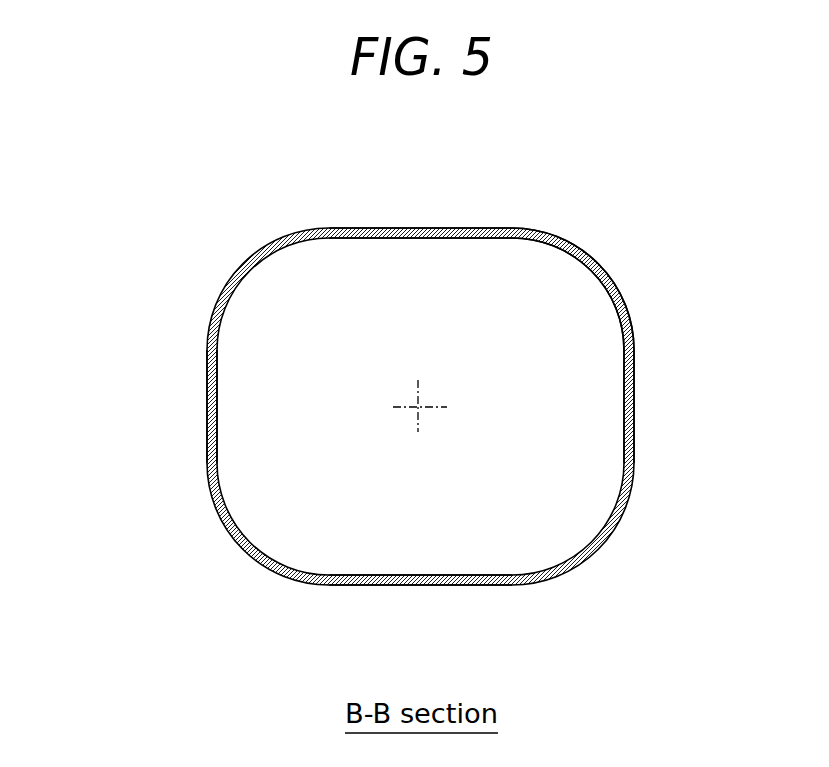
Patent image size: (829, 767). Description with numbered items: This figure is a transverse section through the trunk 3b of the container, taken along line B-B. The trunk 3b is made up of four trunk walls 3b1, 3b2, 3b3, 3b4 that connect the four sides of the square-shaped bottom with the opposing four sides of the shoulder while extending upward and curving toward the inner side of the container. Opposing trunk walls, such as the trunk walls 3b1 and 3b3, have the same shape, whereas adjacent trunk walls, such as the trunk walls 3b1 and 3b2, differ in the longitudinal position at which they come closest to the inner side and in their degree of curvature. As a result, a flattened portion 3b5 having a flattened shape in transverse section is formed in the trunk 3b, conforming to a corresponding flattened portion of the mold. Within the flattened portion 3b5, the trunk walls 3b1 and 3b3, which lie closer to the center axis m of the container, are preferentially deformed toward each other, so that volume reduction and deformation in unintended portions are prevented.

The trunk 3b is at (420, 406).
The trunk wall 3b1 is at (418, 585).
The trunk wall 3b2 is at (633, 397).
The trunk wall 3b3 is at (418, 228).
The trunk wall 3b4 is at (208, 410).
The flattened portion 3b5 is at (622, 266).
The center axis m is at (418, 407).